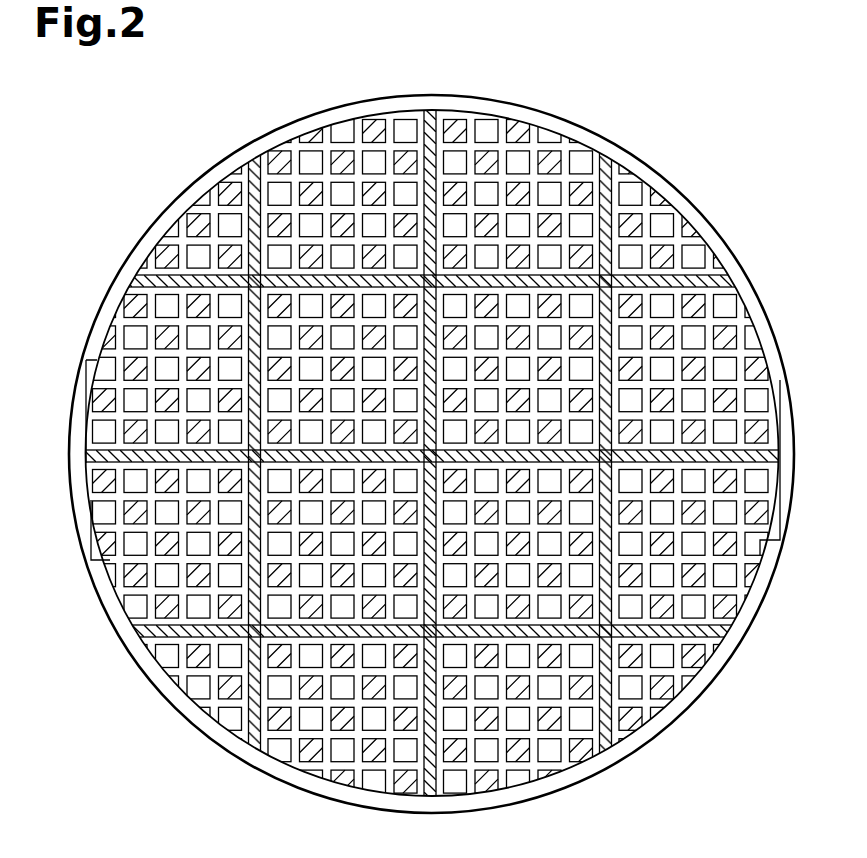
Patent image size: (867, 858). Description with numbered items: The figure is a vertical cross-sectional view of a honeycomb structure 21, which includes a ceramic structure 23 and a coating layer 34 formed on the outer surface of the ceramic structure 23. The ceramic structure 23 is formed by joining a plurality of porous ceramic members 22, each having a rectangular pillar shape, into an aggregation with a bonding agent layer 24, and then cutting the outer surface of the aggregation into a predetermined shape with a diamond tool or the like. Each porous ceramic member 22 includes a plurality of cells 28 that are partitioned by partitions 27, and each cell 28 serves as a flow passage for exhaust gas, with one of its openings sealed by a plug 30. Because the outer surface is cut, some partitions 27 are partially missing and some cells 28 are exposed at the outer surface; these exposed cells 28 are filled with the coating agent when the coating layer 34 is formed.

The honeycomb structure 21 is at (164, 116).
The porous ceramic member 22 is at (762, 548).
The ceramic structure 23 is at (626, 167).
The bonding agent layer 24 is at (150, 628).
The partition 27 is at (98, 403).
The cell 28 is at (127, 546).
The plug 30 is at (544, 150).
The coating layer 34 is at (706, 218).